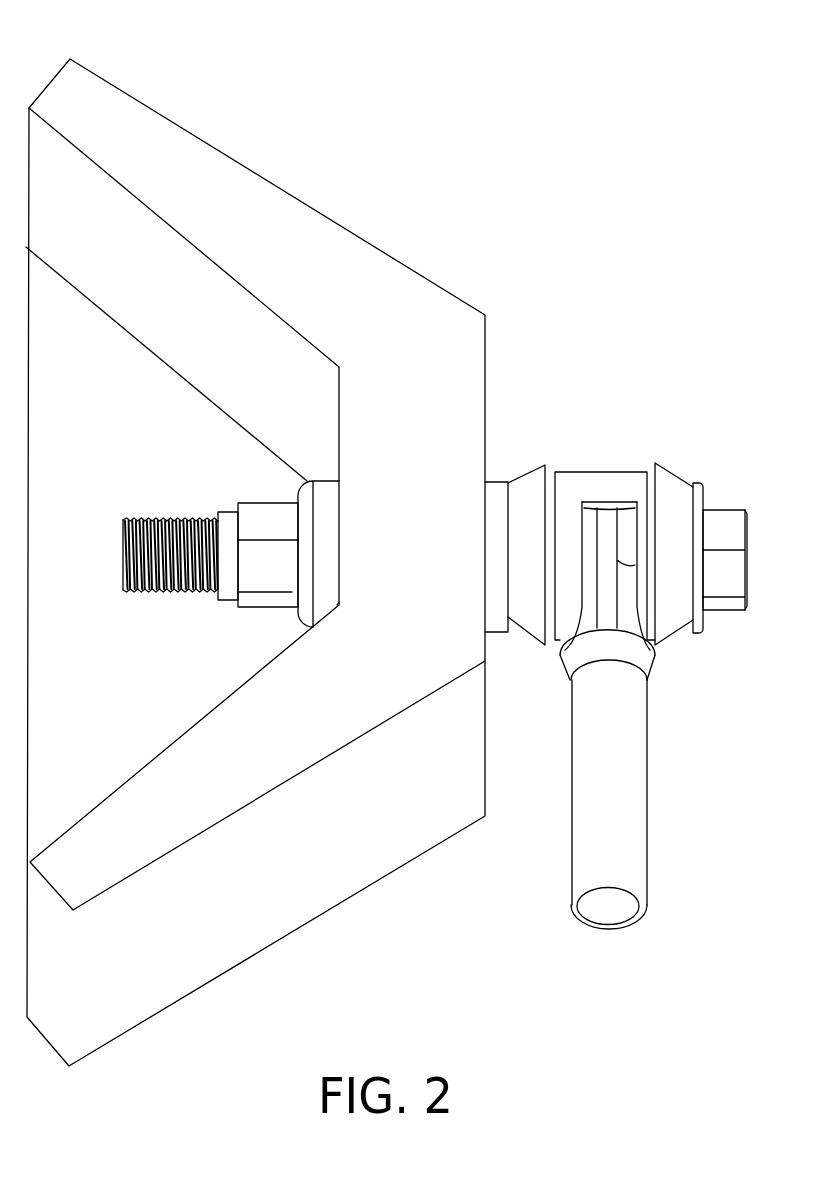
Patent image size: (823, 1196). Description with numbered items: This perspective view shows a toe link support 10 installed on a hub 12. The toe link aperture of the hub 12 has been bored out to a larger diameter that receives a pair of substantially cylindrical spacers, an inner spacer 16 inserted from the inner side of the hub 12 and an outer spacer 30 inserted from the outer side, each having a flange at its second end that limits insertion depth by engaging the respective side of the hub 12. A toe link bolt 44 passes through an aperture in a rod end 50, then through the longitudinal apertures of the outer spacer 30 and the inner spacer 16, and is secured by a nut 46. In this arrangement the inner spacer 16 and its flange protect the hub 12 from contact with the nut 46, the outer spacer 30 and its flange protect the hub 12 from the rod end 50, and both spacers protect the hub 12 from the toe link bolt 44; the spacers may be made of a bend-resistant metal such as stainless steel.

The toe link support 10 is at (499, 82).
The hub 12 is at (327, 245).
The inner spacer 16 is at (327, 522).
The outer spacer 30 is at (498, 525).
The toe link bolt 44 is at (123, 543).
The nut 46 is at (258, 520).
The rod end 50 is at (617, 480).